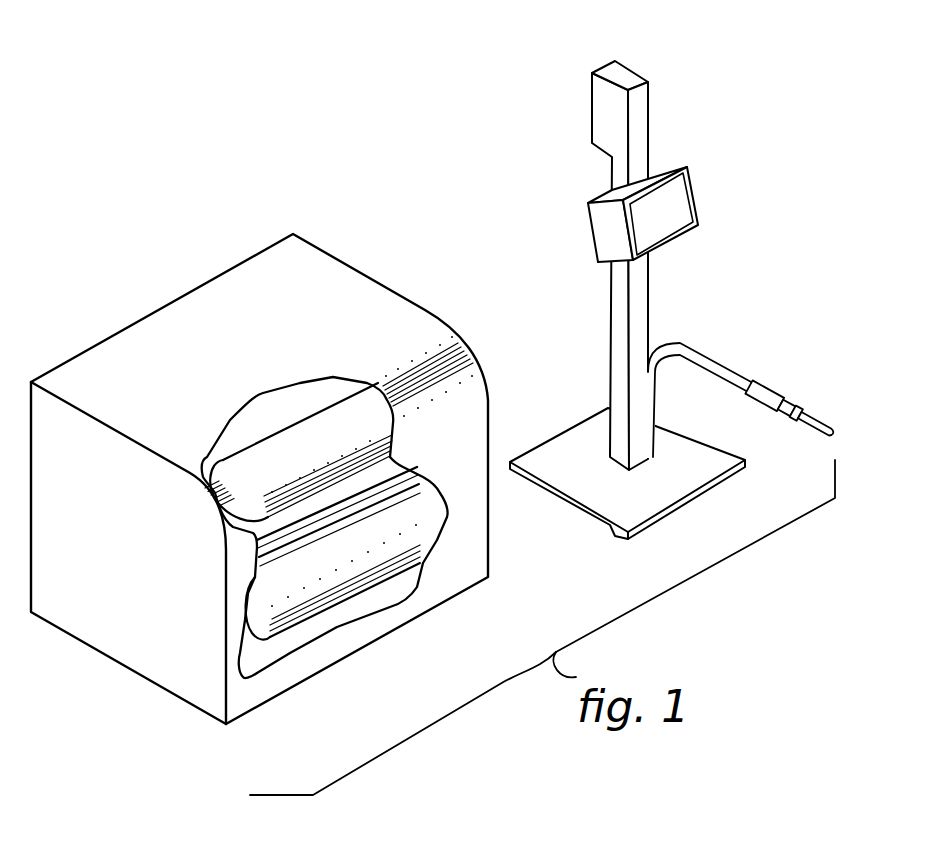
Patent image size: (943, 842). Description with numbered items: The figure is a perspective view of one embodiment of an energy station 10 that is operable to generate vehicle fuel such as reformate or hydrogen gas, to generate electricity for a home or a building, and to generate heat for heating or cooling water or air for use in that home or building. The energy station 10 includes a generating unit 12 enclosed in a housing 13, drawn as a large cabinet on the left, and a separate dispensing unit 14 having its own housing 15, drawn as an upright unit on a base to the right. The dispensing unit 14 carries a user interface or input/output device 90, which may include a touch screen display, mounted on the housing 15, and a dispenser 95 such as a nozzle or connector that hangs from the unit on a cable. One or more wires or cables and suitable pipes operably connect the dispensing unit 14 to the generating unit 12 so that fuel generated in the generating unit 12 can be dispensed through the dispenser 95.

The energy station 10 is at (246, 114).
The generating unit 12 is at (102, 292).
The housing 13 is at (227, 307).
The dispensing unit 14 is at (526, 200).
The housing 15 is at (604, 108).
The input/output device 90 is at (689, 170).
The dispenser 95 is at (778, 397).